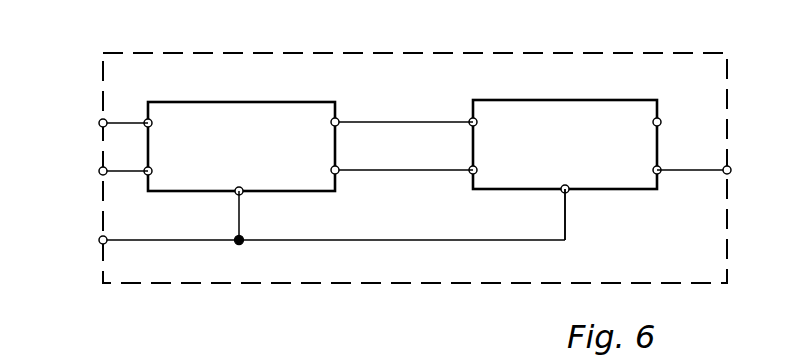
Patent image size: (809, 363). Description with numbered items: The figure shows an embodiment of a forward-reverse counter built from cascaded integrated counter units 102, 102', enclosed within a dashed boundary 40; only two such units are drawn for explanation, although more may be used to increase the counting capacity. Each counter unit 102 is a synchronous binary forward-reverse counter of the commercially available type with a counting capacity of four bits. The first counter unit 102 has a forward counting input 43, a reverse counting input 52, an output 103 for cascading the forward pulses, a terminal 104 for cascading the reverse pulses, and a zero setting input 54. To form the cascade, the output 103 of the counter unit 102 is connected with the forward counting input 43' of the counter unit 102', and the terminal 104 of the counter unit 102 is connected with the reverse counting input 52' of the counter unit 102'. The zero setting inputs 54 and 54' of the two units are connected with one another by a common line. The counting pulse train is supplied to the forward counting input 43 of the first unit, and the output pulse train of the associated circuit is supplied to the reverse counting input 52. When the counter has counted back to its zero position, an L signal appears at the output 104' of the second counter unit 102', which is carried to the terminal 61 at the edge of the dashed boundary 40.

The cascaded up/down counter circuit 40 is at (415, 208).
The forward counting input 43 is at (104, 103).
The forward counting input 43' is at (404, 97).
The reverse counting input 52 is at (104, 151).
The reverse counting input 52' is at (404, 188).
The zero setting input 54 is at (313, 217).
The zero setting input 54' is at (600, 214).
The output terminal 61 is at (723, 174).
The counter unit 102 is at (262, 163).
The counter unit 102' is at (553, 165).
The output for cascading of the forward pulses 103 is at (339, 119).
The input for cascading of the reverse pulses 104 is at (358, 150).
The output 104' is at (684, 146).